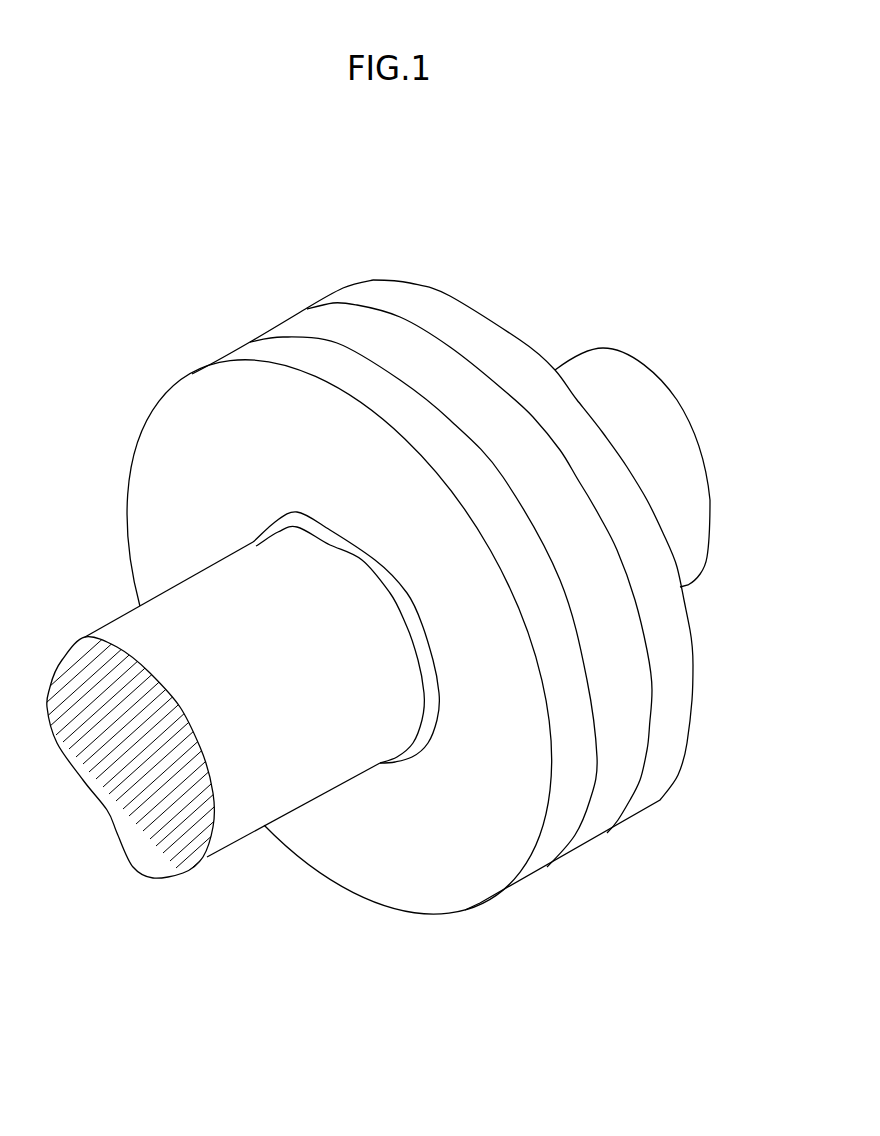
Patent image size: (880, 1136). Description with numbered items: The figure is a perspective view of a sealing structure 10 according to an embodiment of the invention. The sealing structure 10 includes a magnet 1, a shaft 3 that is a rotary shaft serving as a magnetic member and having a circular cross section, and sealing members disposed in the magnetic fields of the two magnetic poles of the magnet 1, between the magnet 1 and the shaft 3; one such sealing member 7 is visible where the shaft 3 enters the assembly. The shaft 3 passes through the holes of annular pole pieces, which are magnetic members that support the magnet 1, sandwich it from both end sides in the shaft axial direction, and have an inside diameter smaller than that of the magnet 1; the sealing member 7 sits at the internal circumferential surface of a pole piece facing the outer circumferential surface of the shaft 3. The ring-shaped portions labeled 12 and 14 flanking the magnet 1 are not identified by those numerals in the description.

The sealing structure 10 is at (572, 260).
The first layer 14 is at (305, 362).
The magnet 1 is at (348, 323).
The third layer 12 is at (423, 300).
The shaft 3 is at (658, 401).
The sealing member 7 is at (423, 732).